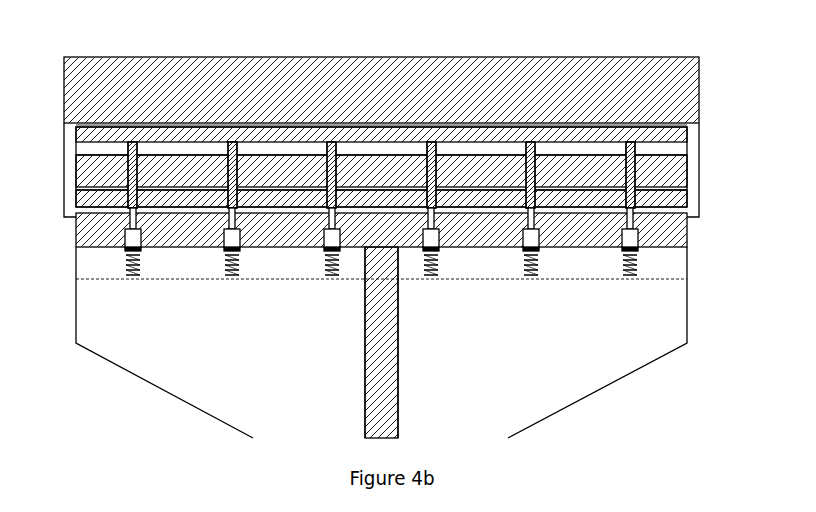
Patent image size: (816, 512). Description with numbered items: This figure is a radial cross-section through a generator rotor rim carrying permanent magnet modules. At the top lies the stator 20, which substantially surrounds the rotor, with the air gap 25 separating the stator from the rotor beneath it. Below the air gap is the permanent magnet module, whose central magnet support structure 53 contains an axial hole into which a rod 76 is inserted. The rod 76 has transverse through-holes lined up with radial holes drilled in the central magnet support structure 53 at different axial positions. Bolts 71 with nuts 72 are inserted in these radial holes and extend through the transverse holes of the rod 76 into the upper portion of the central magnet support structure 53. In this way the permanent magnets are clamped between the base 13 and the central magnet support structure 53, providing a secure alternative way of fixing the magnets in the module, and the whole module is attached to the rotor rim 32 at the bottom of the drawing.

The stator 20 is at (238, 78).
The air gap 25 is at (523, 126).
The rod 76 is at (117, 150).
The base 13 is at (88, 199).
The central magnet support structure 53 is at (645, 157).
The bolt 71 is at (632, 144).
The nut 72 is at (633, 209).
The rotor rim 32 is at (98, 233).